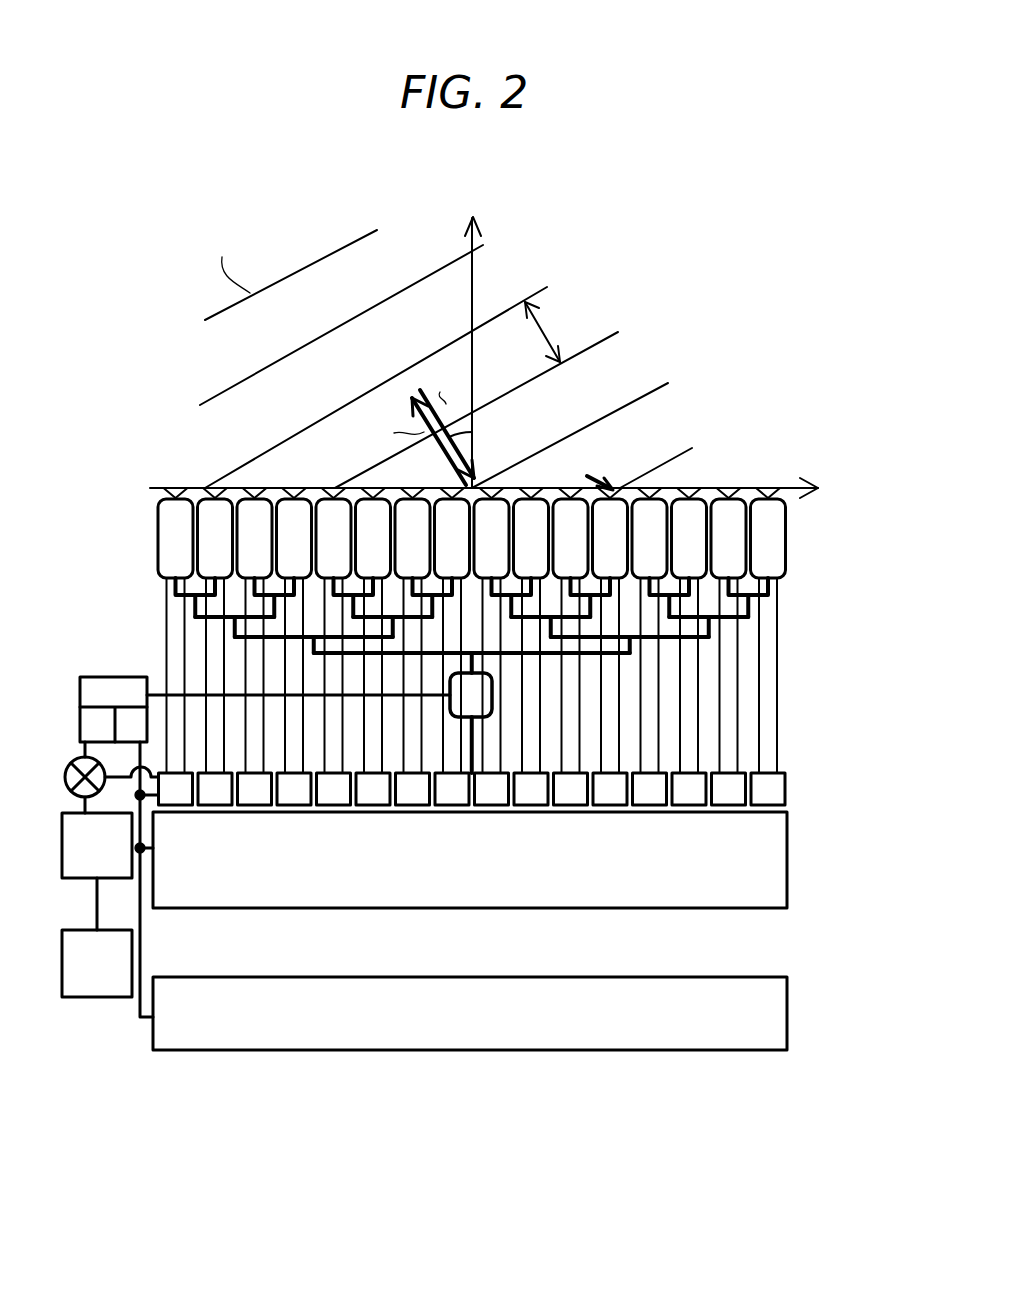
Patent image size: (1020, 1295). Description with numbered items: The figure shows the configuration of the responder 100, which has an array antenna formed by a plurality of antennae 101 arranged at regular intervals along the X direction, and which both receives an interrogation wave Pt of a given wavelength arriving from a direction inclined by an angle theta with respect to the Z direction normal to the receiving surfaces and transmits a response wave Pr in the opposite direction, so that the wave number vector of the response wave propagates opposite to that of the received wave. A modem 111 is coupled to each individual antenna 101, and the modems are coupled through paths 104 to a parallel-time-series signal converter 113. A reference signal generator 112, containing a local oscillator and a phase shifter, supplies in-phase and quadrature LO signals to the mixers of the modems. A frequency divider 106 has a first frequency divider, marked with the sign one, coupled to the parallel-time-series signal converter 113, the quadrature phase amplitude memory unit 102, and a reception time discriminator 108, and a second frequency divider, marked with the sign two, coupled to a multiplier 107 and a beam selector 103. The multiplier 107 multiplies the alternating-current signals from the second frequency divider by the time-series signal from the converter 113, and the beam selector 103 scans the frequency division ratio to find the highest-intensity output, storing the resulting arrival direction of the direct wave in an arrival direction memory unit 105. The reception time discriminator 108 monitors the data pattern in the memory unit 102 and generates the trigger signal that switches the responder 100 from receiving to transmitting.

The responder 100 is at (766, 305).
The antenna 101 is at (728, 492).
The quadrature phase amplitude memory unit 102 is at (755, 853).
The beam selector 103 is at (62, 848).
The path 104 is at (757, 628).
The arrival direction memory unit 105 is at (77, 998).
The frequency divider 106 is at (130, 677).
The multiplier 107 is at (74, 758).
The reception time discriminator 108 is at (628, 1026).
The modem 111 is at (770, 515).
The reference signal generator 112 is at (478, 697).
The parallel-time-series signal converter 113 is at (770, 792).